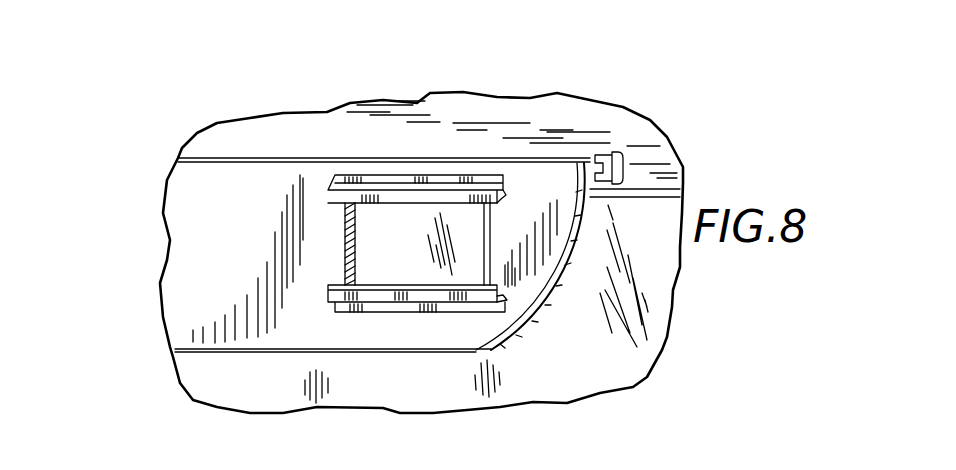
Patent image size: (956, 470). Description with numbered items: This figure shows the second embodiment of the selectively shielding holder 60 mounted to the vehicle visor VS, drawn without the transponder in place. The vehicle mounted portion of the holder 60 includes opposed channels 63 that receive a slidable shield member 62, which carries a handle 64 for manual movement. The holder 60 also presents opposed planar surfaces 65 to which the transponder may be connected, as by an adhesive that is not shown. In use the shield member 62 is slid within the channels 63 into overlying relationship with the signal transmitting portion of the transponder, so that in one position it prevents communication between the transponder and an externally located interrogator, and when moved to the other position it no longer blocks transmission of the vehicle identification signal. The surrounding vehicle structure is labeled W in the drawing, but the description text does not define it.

The selectively shielding holder 60 is at (336, 237).
The slidable shield member 62 is at (470, 243).
The opposed channels 63 is at (505, 203).
The handle 64 is at (345, 266).
The opposed planar surfaces 65 is at (447, 190).
The visor VS is at (288, 332).
The wall W is at (652, 327).